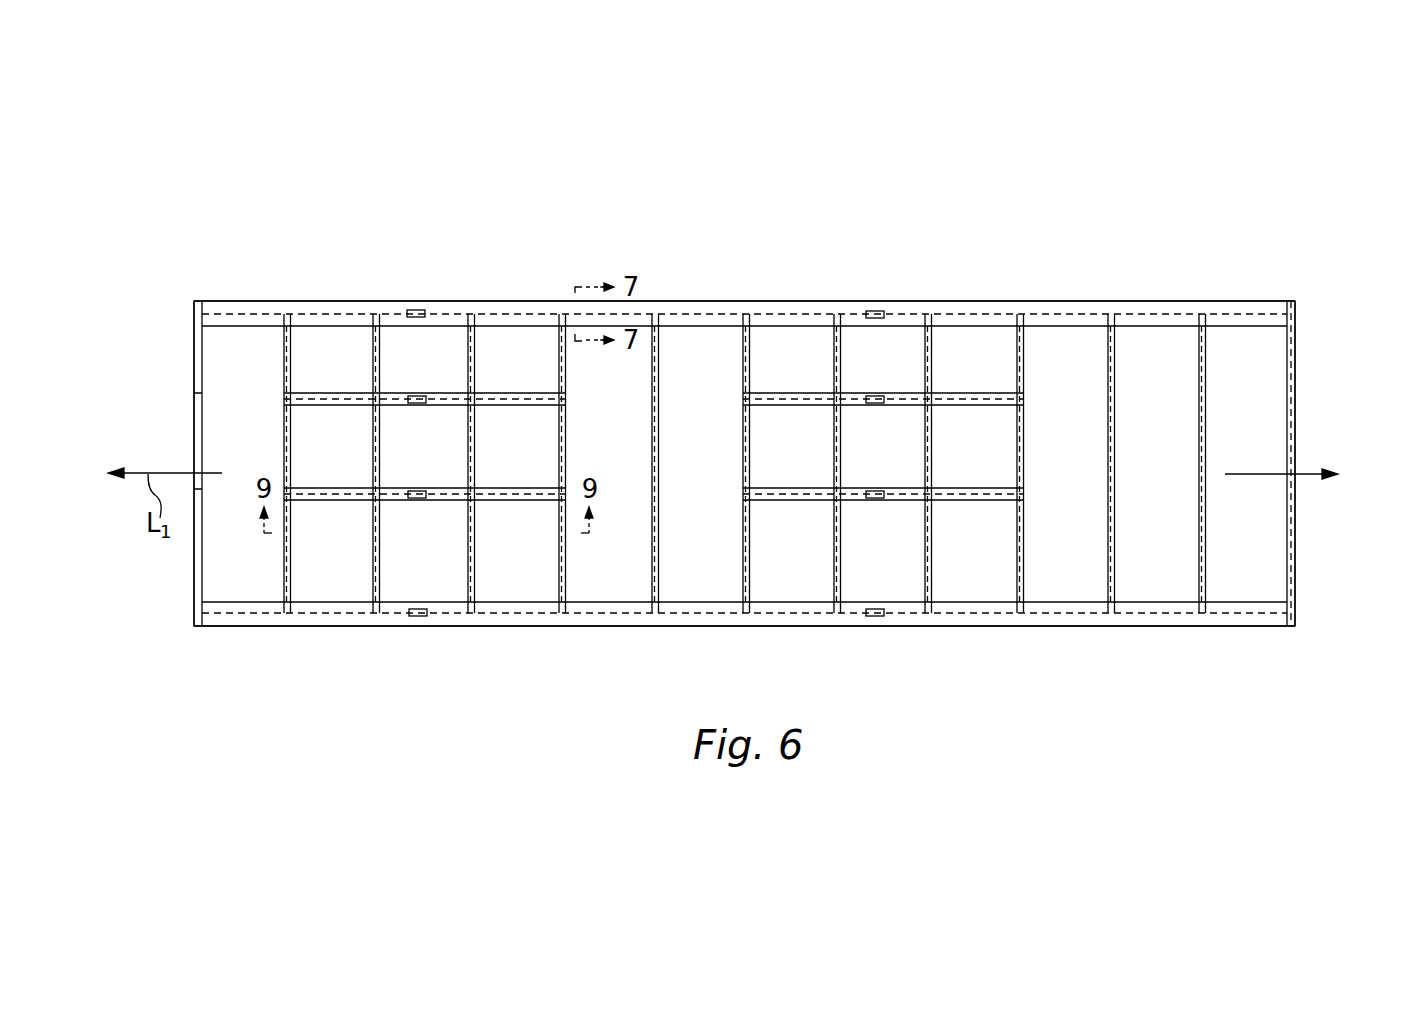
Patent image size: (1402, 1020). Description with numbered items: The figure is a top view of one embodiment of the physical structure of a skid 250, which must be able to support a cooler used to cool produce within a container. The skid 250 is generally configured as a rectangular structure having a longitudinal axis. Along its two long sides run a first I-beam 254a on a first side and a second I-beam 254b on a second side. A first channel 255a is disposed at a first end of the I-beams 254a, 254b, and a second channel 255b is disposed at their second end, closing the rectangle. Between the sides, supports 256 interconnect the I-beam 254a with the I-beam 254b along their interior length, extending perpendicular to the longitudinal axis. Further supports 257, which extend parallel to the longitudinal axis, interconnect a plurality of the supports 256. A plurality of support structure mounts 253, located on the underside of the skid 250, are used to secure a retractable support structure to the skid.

The skid 250 is at (942, 252).
The support structure mounts 253 is at (414, 310).
The first I-beam 254a is at (1062, 301).
The second I-beam 254b is at (1060, 627).
The first channel 255a is at (1296, 428).
The second channel 255b is at (194, 370).
The supports 256 is at (291, 578).
The supports 257 is at (325, 393).